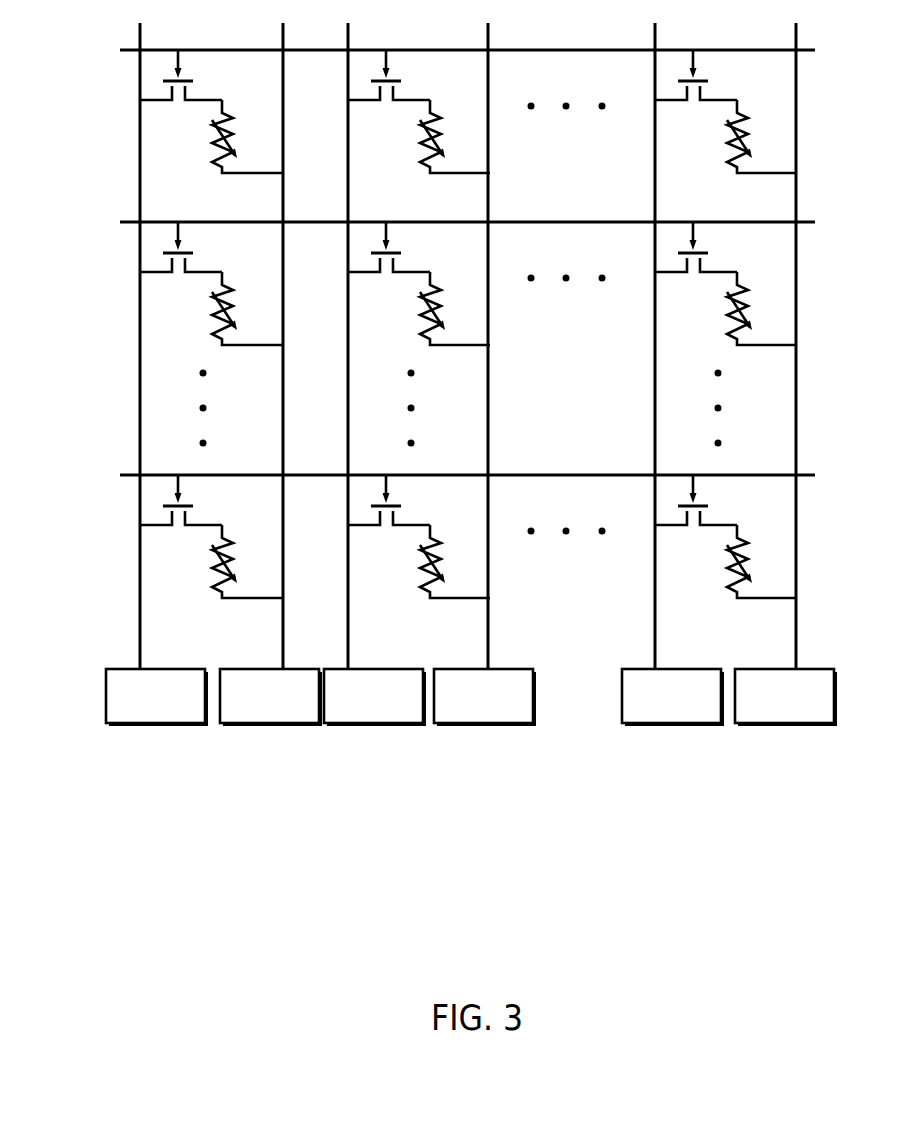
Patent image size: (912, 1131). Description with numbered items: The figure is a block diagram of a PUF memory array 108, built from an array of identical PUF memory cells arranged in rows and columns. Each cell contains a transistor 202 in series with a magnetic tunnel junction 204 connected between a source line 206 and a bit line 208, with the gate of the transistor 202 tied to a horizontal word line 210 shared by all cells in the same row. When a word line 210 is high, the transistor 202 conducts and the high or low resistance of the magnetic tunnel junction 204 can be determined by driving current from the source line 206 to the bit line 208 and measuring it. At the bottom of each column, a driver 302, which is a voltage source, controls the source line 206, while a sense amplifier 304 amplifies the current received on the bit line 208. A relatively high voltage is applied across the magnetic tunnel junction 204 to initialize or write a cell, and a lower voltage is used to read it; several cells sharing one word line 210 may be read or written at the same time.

The PUF memory array 108 is at (47, 47).
The transistor 202 is at (187, 74).
The magnetic tunnel junction 204 is at (214, 139).
The source line 206 is at (141, 41).
The bit line 208 is at (283, 41).
The word line 210 is at (128, 48).
The driver 302 is at (192, 667).
The sense amplifier 304 is at (260, 667).